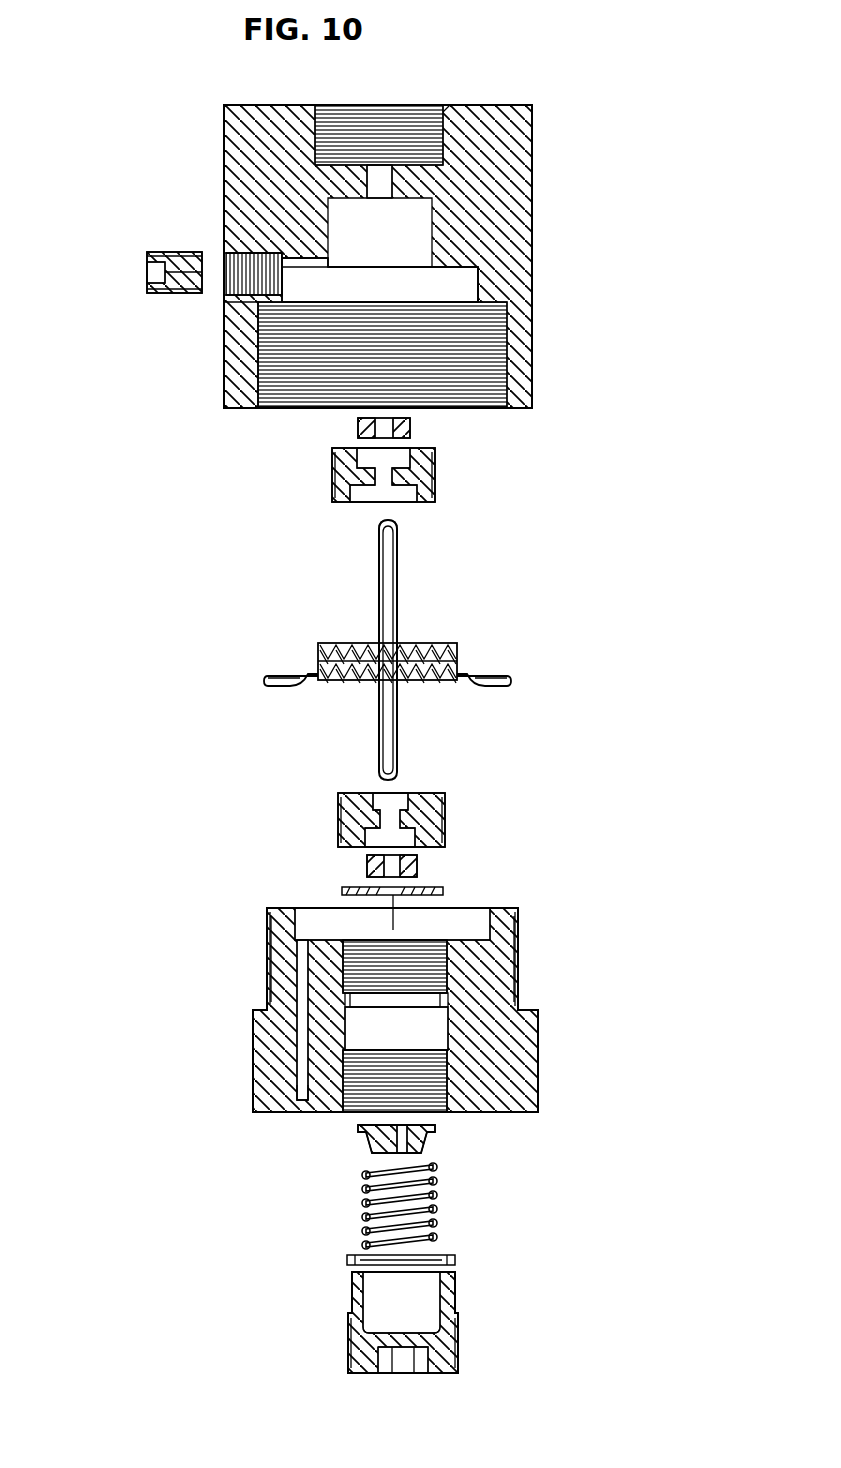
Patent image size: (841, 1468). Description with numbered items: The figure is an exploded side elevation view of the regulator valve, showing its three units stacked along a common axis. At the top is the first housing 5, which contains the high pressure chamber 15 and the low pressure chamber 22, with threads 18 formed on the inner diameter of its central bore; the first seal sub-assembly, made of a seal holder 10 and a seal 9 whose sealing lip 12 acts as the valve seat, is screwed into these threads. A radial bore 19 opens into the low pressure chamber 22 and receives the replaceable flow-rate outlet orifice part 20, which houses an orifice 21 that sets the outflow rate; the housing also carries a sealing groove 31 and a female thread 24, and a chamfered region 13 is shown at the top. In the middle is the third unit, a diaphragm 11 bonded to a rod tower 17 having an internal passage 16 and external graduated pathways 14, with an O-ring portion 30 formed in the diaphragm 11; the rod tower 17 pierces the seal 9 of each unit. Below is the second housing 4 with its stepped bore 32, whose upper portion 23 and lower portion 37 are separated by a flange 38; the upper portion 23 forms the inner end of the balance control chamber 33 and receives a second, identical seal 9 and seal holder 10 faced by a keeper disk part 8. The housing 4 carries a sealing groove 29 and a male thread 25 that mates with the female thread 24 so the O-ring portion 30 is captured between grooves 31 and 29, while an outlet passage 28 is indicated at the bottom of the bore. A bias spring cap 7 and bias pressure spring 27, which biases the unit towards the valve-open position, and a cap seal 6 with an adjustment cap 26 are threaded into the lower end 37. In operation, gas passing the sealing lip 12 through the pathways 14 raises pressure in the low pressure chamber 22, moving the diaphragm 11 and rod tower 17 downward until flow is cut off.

The second housing 4 is at (540, 1067).
The first housing 5 is at (515, 135).
The cap seal 6 is at (455, 1260).
The bias spring cap 7 is at (358, 1136).
The keeper disk part 8 is at (443, 891).
The seal 9 is at (410, 428).
The seal holder 10 is at (440, 465).
The diaphragm 11 is at (325, 662).
The sealing lip 12 is at (405, 410).
The chamfered edge 13 is at (449, 108).
The external graduated pathways 14 is at (397, 575).
The high pressure chamber 15 is at (397, 118).
The internal passage 16 is at (378, 527).
The rod tower 17 is at (380, 553).
The threads 18 is at (325, 253).
The radial bore 19 is at (236, 248).
The replaceable flow-rate outlet orifice part 20 is at (157, 252).
The orifice 21 is at (147, 270).
The low pressure chamber 22 is at (297, 280).
The upper portion of stepped bore 23 is at (340, 960).
The female thread 24 is at (256, 375).
The male thread 25 is at (268, 990).
The adjustment cap 26 is at (455, 1291).
The bias pressure spring 27 is at (364, 1198).
The channel outlet 28 is at (305, 1097).
The sealing groove 29 is at (518, 920).
The O-ring portion 30 is at (513, 667).
The sealing groove 31 is at (500, 290).
The stepped bore 32 is at (475, 1085).
The balance control chamber 33 is at (358, 1018).
The lower portion of stepped bore 37 is at (310, 1063).
The flange 38 is at (440, 1000).